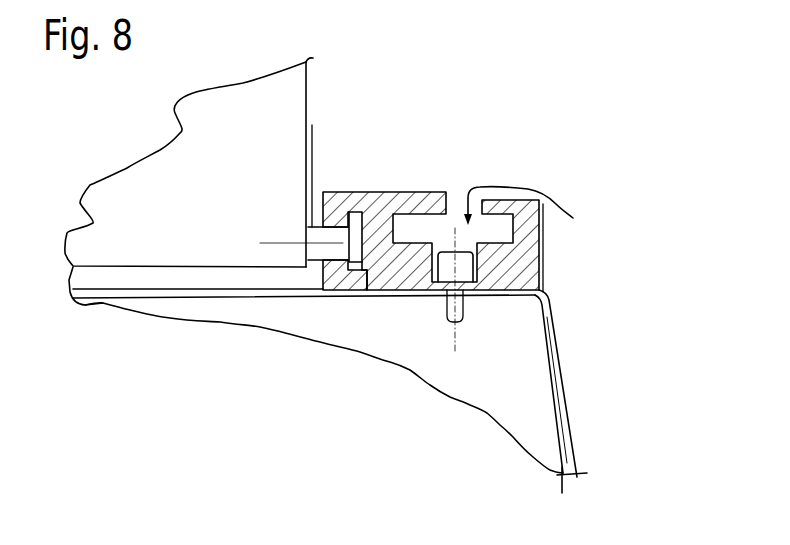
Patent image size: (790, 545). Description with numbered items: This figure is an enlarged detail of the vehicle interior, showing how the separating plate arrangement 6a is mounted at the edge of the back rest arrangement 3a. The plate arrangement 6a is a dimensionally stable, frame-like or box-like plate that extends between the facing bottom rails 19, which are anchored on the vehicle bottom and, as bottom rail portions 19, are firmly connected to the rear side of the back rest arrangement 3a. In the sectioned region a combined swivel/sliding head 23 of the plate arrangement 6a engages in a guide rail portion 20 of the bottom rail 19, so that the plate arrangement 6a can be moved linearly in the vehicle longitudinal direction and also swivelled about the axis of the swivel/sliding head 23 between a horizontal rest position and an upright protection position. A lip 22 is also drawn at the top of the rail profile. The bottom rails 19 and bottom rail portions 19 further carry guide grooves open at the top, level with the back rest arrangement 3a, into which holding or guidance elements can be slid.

The plate arrangement 6a is at (300, 103).
The guide rail portion 20 is at (383, 191).
The swivel/sliding head 23 is at (330, 278).
The bottom rail 19 is at (522, 172).
The sealing lip 22 is at (541, 223).
The back rest arrangement 3a is at (557, 340).